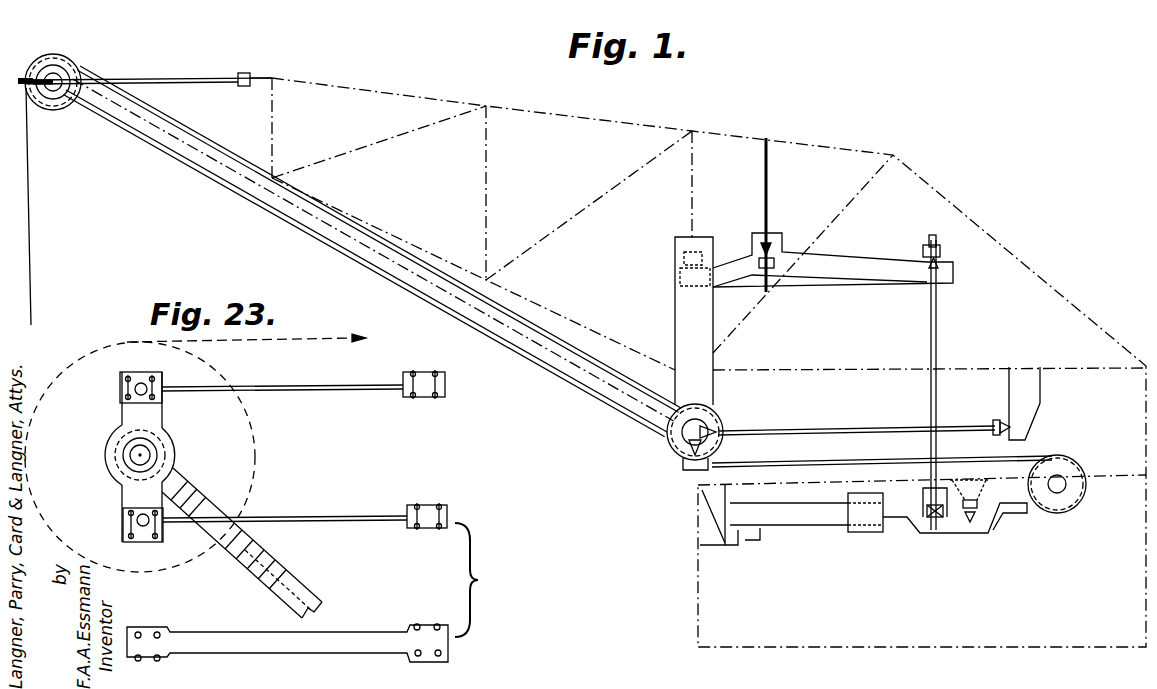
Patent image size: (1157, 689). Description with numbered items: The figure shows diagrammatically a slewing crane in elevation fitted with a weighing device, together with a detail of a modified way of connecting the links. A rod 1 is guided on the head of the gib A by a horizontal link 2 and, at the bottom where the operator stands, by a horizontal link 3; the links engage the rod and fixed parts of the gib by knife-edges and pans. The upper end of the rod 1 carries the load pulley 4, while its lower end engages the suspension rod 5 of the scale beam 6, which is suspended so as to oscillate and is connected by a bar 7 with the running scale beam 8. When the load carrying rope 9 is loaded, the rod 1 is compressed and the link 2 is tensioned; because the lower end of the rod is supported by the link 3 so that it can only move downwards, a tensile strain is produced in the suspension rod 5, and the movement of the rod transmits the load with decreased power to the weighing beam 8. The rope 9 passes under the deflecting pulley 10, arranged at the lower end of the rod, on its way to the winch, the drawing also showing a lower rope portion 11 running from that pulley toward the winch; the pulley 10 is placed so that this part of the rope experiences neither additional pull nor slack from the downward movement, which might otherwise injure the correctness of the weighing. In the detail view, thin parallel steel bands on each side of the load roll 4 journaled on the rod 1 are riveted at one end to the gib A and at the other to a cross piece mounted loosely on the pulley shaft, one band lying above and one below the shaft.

In FIG. 1, the rod 1 is at (325, 237).
In FIG. 23, the rod 1 is at (293, 583).
In FIG. 1, the horizontal link 2 is at (163, 77).
In FIG. 1, the horizontal link 3 is at (806, 432).
In FIG. 1, the load pulley 4 is at (53, 110).
In FIG. 23, the load pulley 4 is at (248, 446).
In FIG. 1, the suspension rod 5 is at (674, 309).
In FIG. 1, the scale beam 6 is at (836, 258).
In FIG. 1, the bar 7 is at (943, 340).
In FIG. 1, the running scale beam 8 is at (808, 518).
In FIG. 1, the load carrying rope 9 is at (33, 280).
In FIG. 1, the deflecting pulley 10 is at (672, 450).
In FIG. 1, the lower cable 11 is at (867, 459).
In FIG. 1, the gib A is at (486, 167).